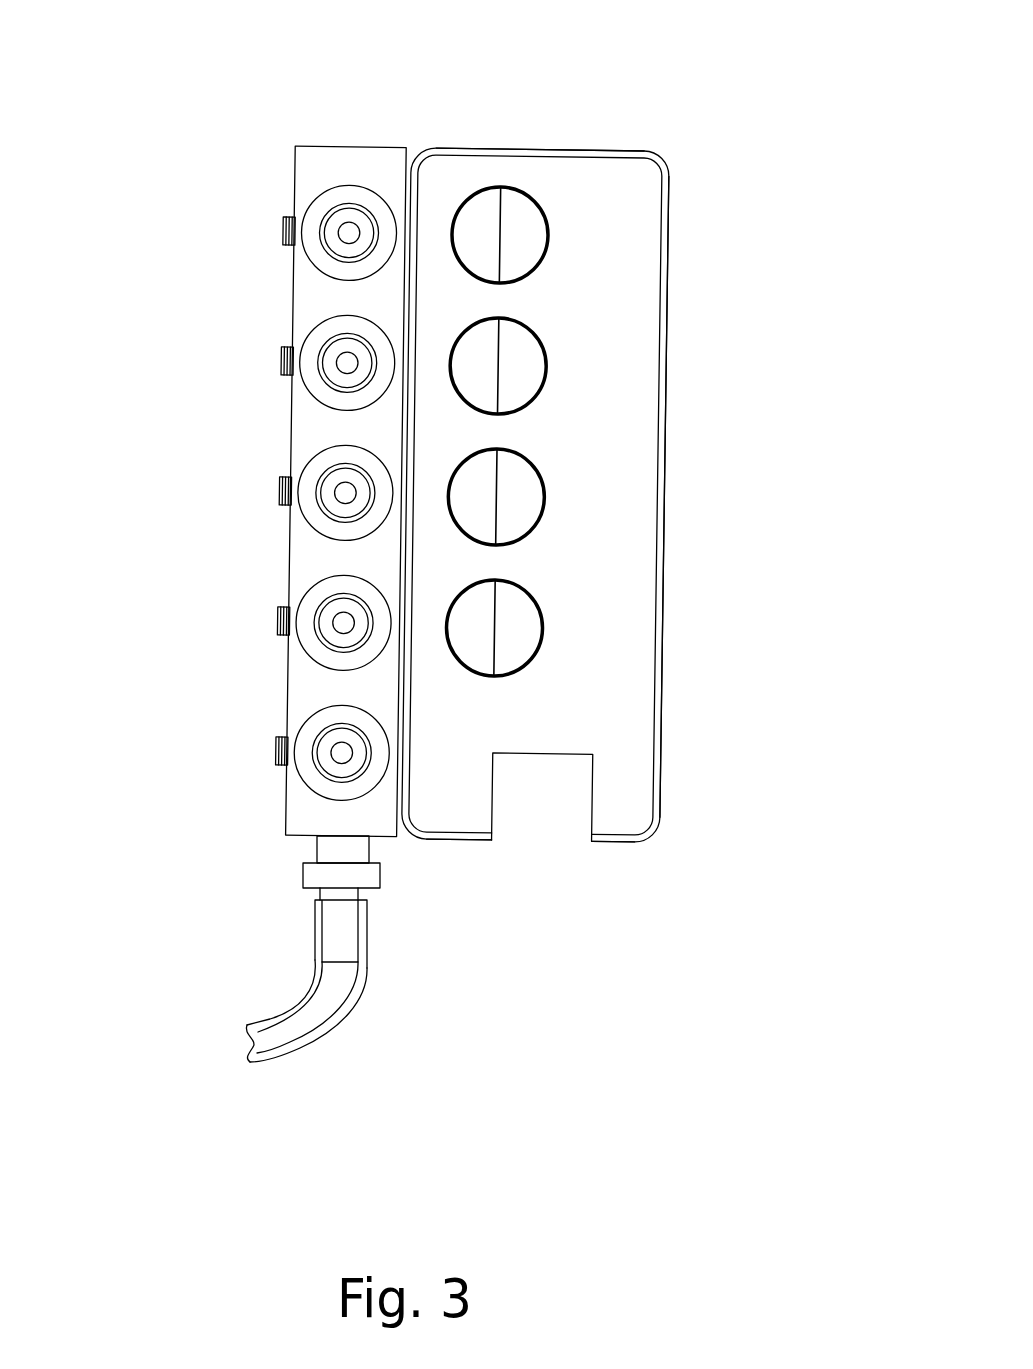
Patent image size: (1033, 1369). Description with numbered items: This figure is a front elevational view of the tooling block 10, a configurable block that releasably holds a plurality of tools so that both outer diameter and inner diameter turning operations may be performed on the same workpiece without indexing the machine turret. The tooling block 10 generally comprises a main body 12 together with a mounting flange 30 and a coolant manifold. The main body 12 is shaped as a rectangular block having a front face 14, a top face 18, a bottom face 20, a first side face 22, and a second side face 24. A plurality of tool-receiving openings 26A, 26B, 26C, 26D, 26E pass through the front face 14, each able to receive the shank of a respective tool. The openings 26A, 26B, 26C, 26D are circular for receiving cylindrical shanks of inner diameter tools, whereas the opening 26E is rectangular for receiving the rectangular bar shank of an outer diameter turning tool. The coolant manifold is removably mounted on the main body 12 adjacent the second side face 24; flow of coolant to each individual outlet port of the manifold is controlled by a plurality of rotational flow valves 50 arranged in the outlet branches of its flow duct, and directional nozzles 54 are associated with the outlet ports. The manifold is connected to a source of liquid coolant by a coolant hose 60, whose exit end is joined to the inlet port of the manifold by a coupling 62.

The tooling block 10 is at (645, 78).
The main body 12 is at (664, 165).
The front face 14 is at (623, 460).
The top face 18 is at (547, 150).
The bottom face 20 is at (455, 842).
The first side face 22 is at (667, 452).
The second side face 24 is at (405, 197).
The tool-receiving opening 26A is at (548, 233).
The tool-receiving opening 26B is at (603, 365).
The tool-receiving opening 26C is at (602, 496).
The tool-receiving opening 26D is at (600, 627).
The tool-receiving opening 26E is at (592, 808).
The mounting flange 30 is at (498, 230).
The rotational flow valves 50 is at (282, 236).
The directional nozzles 54 is at (333, 257).
The coolant hose 60 is at (353, 1012).
The coupling 62 is at (317, 853).